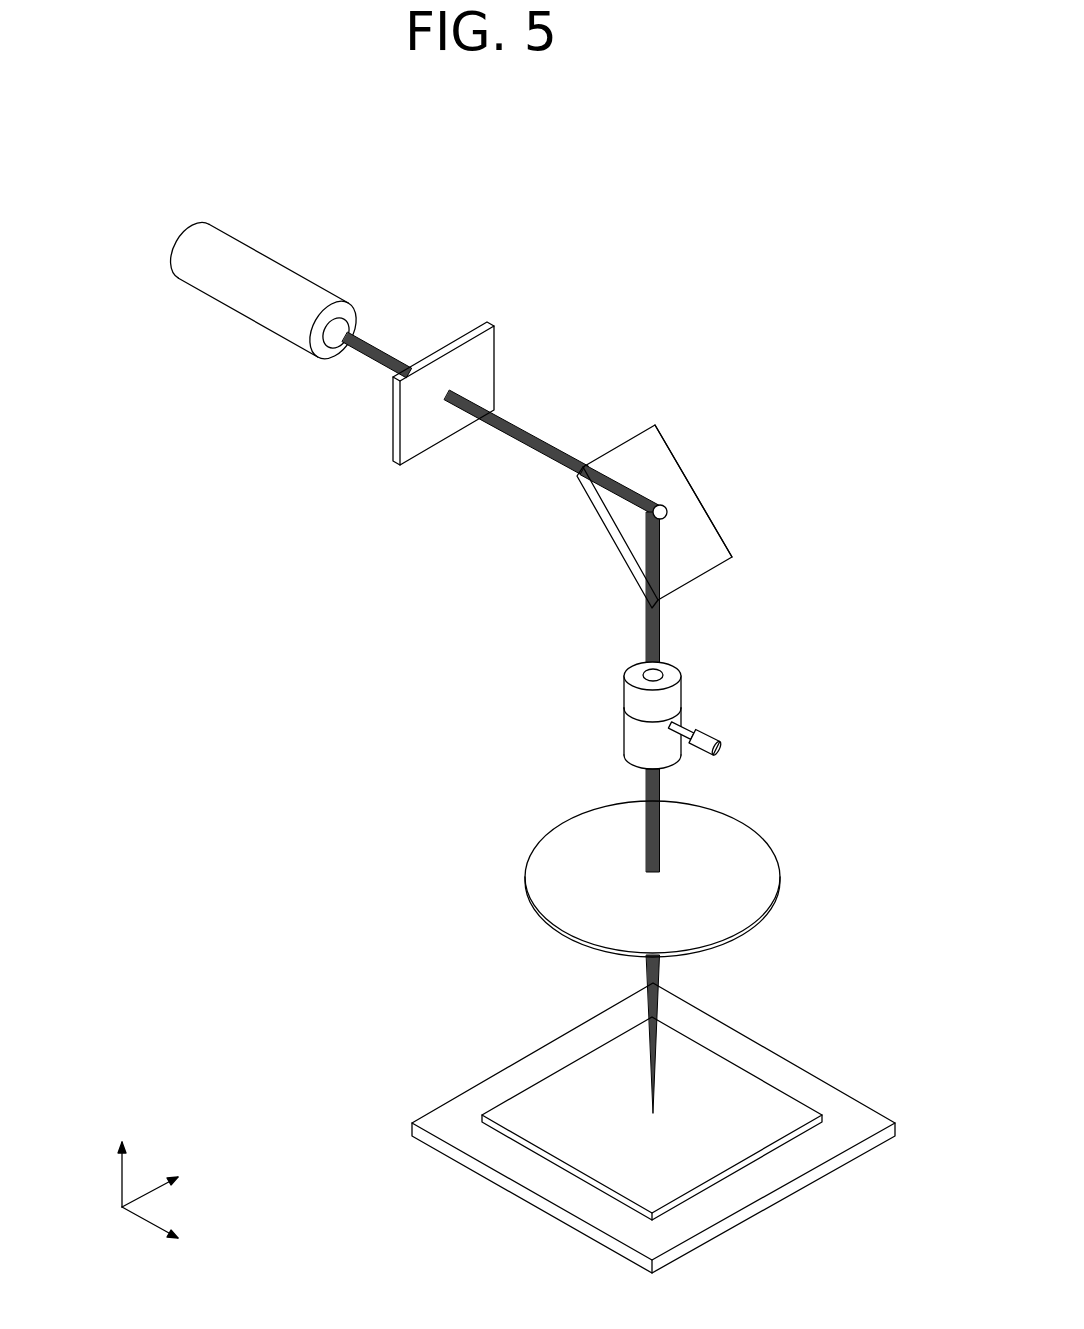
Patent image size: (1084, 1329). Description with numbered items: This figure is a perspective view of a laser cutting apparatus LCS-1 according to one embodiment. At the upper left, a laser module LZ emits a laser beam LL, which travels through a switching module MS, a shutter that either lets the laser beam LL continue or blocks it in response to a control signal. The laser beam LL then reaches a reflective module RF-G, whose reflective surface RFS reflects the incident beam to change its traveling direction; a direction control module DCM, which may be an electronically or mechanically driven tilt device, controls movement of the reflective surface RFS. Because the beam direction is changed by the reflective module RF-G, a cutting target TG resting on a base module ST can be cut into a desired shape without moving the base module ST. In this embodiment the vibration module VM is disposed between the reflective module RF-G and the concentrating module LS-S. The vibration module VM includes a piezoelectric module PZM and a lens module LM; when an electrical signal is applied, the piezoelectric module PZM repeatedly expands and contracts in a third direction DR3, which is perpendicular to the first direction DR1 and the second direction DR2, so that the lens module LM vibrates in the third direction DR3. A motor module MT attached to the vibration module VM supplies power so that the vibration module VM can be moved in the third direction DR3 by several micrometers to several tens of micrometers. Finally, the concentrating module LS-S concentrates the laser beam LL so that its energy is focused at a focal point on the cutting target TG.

The laser cutting apparatus LCS-1 is at (648, 180).
The laser module LZ is at (275, 273).
The laser beam LL is at (377, 347).
The switching module MS is at (494, 326).
The reflective surface RFS is at (641, 462).
The reflective module RF-G is at (680, 463).
The direction control module DCM is at (667, 504).
The vibration module VM is at (535, 687).
The piezoelectric module PZM is at (630, 693).
The lens module LM is at (635, 737).
The motor module MT is at (707, 732).
The concentrating module LS-S is at (733, 833).
The base module ST is at (828, 1168).
The cutting target TG is at (730, 1167).
The first direction DR1 is at (173, 1232).
The second direction DR2 is at (173, 1184).
The third direction DR3 is at (123, 1160).